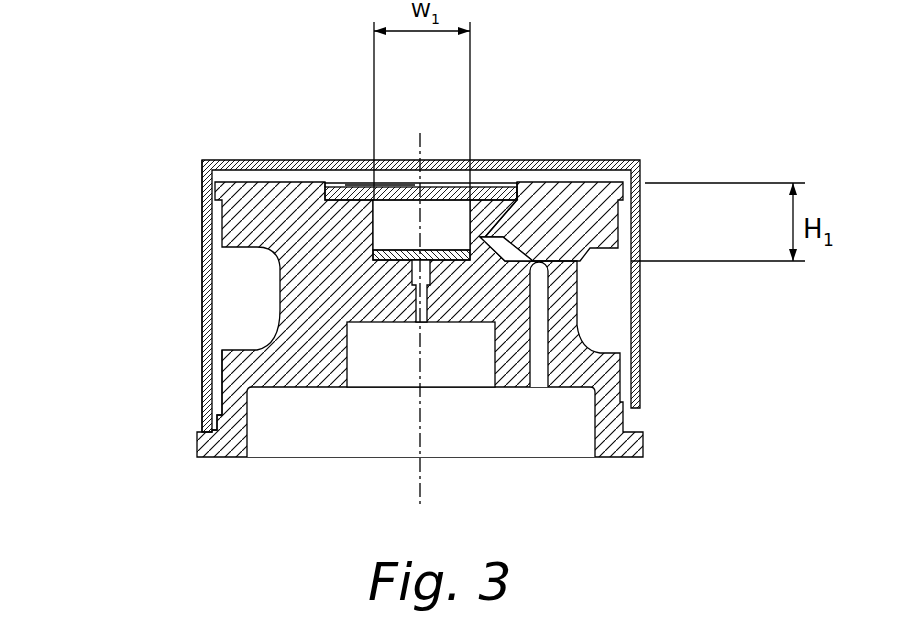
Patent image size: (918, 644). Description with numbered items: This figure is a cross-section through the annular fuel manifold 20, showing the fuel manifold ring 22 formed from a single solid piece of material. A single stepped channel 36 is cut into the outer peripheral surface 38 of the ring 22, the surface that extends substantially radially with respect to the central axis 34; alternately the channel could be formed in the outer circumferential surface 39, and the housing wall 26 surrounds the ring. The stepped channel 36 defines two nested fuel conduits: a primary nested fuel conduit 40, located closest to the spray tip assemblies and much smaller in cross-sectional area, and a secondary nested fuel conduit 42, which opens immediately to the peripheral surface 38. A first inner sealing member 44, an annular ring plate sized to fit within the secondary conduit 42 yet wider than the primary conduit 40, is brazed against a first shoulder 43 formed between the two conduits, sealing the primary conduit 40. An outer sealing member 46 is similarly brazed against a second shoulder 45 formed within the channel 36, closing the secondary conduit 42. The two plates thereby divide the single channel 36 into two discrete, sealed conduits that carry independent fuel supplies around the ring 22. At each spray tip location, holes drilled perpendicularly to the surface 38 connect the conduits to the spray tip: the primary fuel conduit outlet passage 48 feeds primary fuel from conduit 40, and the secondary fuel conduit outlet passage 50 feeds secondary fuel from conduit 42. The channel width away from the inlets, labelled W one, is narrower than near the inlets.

The die assembly 20 is at (402, 280).
The annular fuel manifold ring 22 is at (575, 188).
The housing 26 is at (199, 328).
The central axis 34 is at (422, 485).
The stepped channel 36 is at (410, 187).
The outer peripheral surface 38 is at (600, 183).
The outer circumferential surface 39 is at (222, 375).
The primary nested fuel conduit 40 is at (438, 279).
The secondary nested fuel conduit 42 is at (443, 217).
The first shoulder 43 is at (500, 237).
The first inner sealing member 44 is at (460, 187).
The second shoulder 45 is at (507, 190).
The outer sealing member 46 is at (486, 181).
The primary fuel conduit outlet passage 48 is at (413, 308).
The secondary fuel conduit outlet passage 50 is at (538, 343).